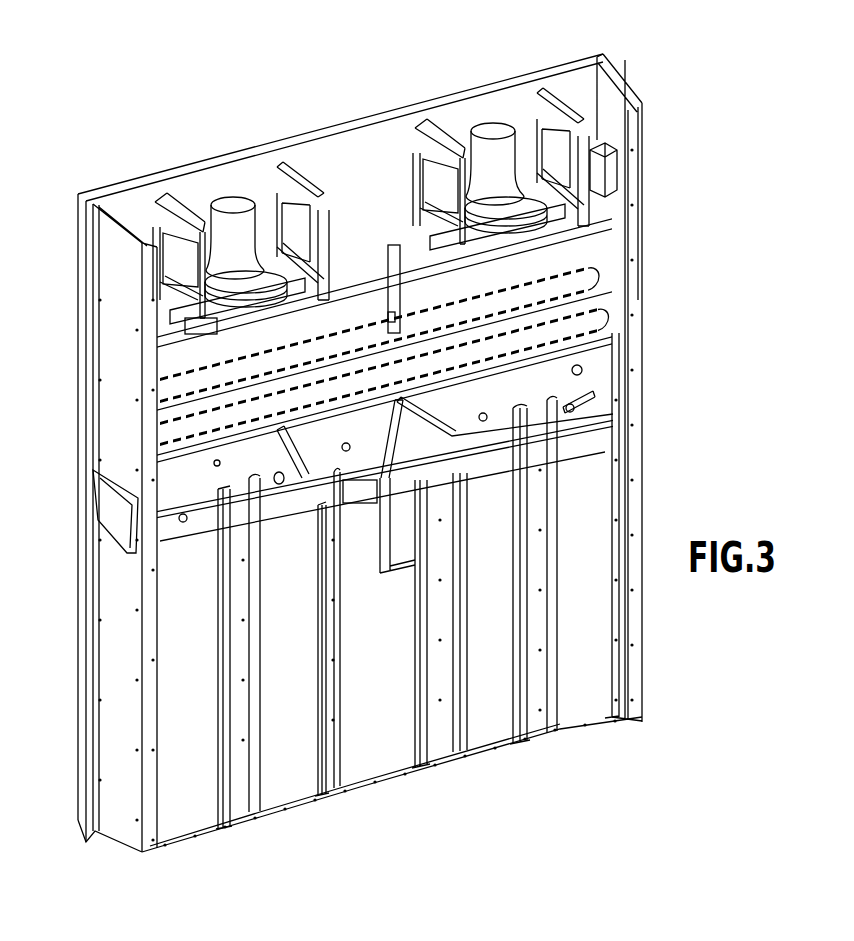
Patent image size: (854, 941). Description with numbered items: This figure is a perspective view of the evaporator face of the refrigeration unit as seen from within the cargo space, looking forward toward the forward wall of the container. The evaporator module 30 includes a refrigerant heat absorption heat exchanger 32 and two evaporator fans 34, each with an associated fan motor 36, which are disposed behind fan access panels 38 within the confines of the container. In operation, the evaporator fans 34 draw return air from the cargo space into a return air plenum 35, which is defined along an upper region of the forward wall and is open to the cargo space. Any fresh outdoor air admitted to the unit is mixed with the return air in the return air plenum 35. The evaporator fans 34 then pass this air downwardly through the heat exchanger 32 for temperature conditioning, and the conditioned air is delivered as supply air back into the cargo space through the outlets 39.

The evaporator module 30 is at (666, 177).
The refrigerant heat absorption heat exchanger 32 is at (598, 386).
The evaporator fans 34 is at (266, 280).
The return air plenum 35 is at (367, 186).
The fan motors 36 is at (232, 225).
The fan access panels 38 is at (120, 513).
The outlets 39 is at (497, 383).